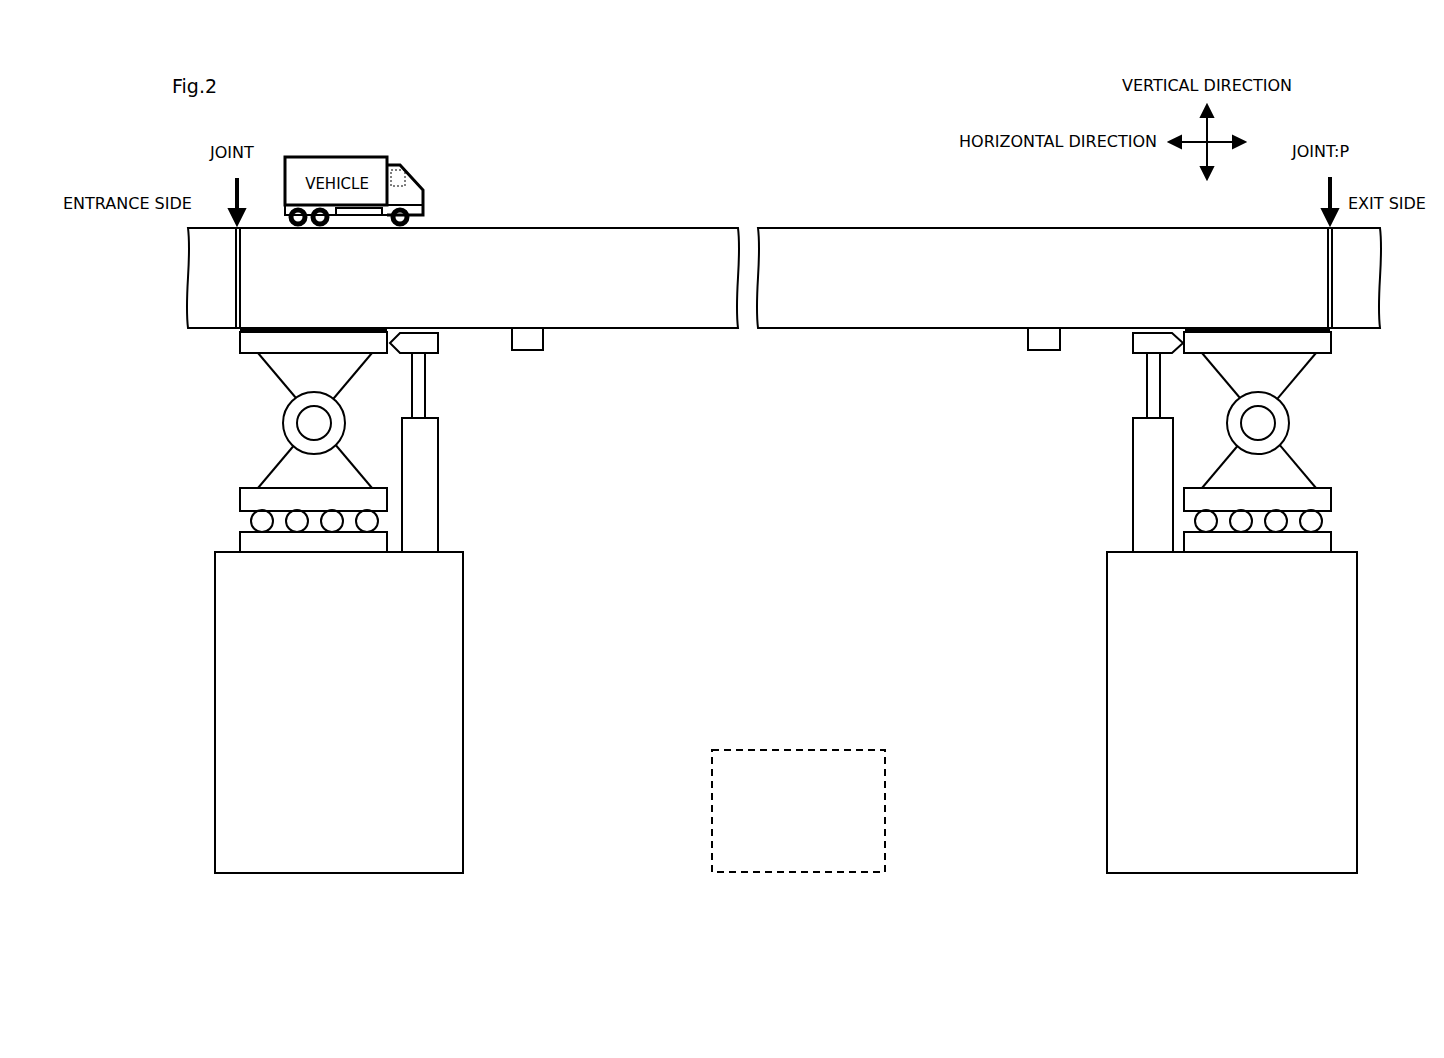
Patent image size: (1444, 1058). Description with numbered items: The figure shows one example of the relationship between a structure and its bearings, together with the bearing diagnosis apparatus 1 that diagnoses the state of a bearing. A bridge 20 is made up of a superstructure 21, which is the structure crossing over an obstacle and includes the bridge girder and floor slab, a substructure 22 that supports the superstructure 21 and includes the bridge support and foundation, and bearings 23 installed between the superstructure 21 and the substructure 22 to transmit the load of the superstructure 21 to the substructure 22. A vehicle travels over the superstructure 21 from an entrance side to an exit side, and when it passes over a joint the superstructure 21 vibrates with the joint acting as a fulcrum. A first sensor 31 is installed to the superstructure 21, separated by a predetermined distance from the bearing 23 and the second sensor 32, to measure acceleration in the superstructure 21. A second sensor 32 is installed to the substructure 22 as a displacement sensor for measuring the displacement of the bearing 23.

The bearing diagnosis apparatus 1 is at (799, 748).
The bridge 20 is at (748, 118).
The superstructure 21 is at (586, 226).
The substructure 22 is at (465, 712).
The bearings 23 is at (282, 425).
The first sensor 31 is at (525, 352).
The second sensor 32 is at (440, 345).